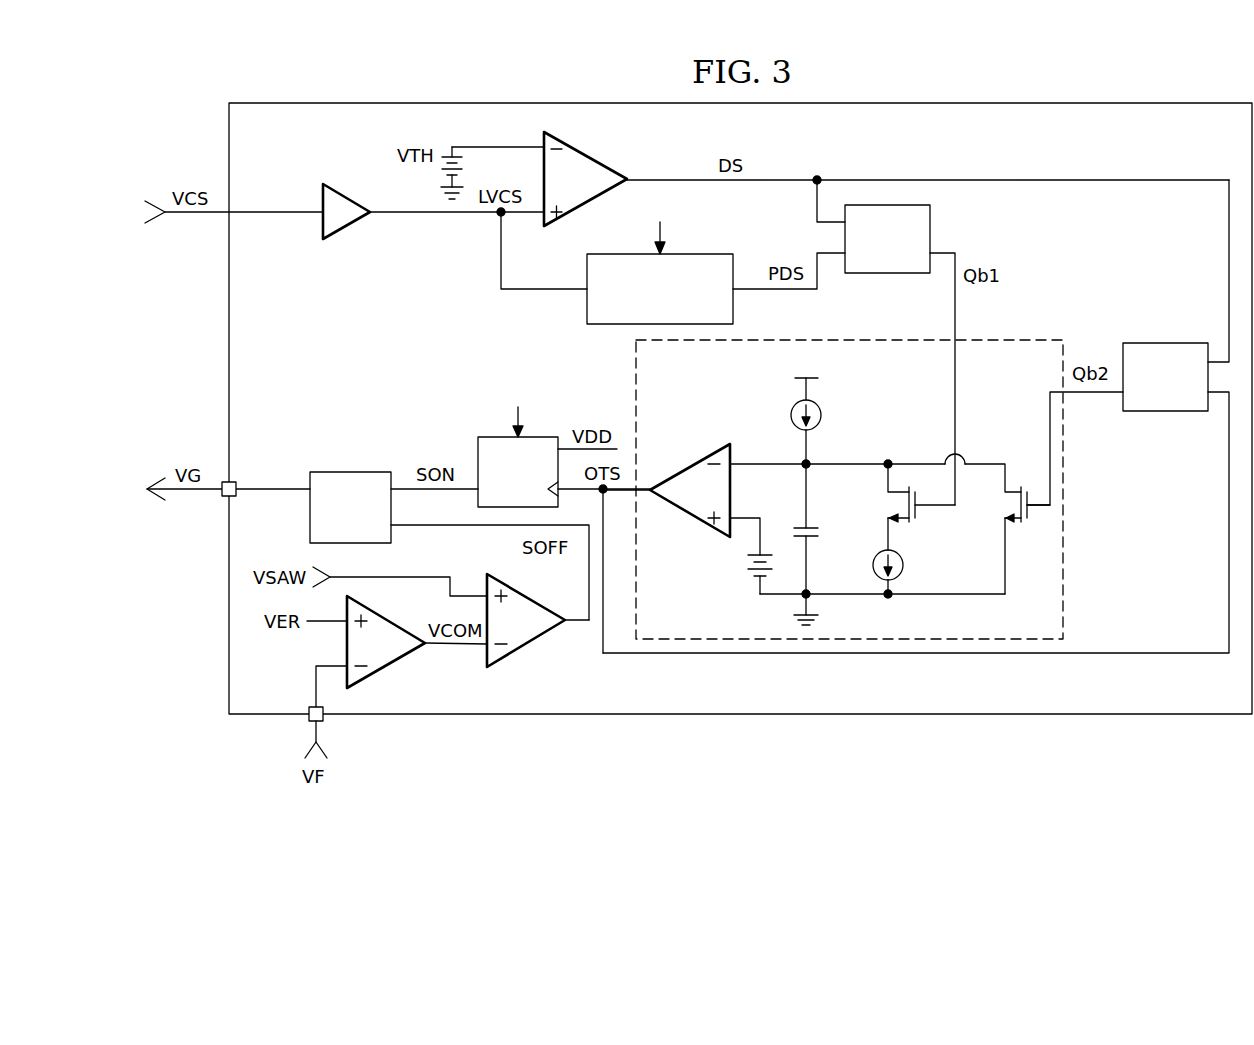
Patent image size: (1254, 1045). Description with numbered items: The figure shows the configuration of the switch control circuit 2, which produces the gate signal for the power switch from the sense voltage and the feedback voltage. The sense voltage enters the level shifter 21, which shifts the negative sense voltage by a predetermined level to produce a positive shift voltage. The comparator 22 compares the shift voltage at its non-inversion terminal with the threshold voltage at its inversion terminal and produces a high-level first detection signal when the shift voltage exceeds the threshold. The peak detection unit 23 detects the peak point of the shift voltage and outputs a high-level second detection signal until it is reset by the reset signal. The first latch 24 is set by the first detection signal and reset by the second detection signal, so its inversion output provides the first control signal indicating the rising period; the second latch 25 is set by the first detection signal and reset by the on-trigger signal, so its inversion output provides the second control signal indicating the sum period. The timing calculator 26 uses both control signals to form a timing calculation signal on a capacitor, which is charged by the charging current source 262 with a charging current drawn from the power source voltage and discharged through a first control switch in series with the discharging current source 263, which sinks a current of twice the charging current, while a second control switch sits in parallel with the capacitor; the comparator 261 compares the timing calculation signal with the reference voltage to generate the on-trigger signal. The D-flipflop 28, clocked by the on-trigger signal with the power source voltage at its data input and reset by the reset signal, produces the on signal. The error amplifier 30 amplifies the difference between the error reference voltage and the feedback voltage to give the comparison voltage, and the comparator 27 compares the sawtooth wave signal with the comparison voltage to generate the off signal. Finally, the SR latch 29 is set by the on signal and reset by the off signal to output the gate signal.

The switch control circuit 2 is at (229, 112).
The level shifter 21 is at (347, 197).
The comparator 22 is at (583, 151).
The peak detection unit 23 is at (700, 254).
The first latch 24 is at (931, 210).
The second latch 25 is at (1165, 411).
The timing calculator 26 is at (1063, 582).
The comparator 261 is at (702, 463).
The charging current source 262 is at (791, 414).
The discharging current source 263 is at (900, 551).
The comparator 27 is at (535, 643).
The D-flipflop 28 is at (490, 437).
The SR latch 29 is at (350, 472).
The error amplifier 30 is at (383, 668).